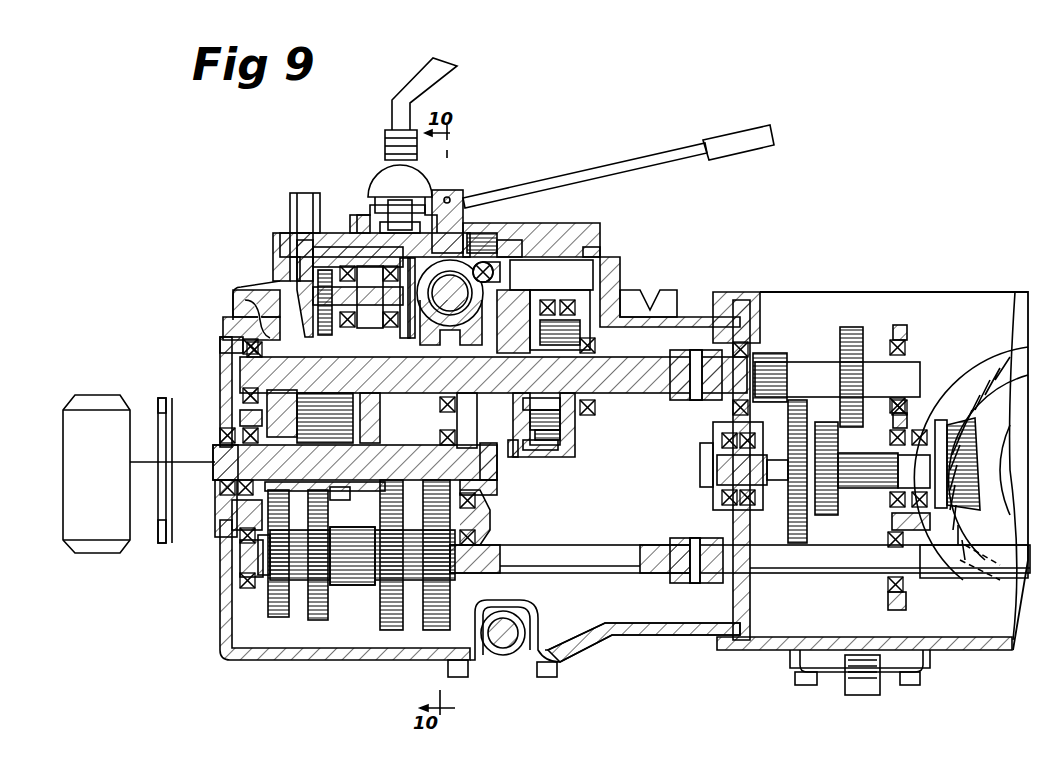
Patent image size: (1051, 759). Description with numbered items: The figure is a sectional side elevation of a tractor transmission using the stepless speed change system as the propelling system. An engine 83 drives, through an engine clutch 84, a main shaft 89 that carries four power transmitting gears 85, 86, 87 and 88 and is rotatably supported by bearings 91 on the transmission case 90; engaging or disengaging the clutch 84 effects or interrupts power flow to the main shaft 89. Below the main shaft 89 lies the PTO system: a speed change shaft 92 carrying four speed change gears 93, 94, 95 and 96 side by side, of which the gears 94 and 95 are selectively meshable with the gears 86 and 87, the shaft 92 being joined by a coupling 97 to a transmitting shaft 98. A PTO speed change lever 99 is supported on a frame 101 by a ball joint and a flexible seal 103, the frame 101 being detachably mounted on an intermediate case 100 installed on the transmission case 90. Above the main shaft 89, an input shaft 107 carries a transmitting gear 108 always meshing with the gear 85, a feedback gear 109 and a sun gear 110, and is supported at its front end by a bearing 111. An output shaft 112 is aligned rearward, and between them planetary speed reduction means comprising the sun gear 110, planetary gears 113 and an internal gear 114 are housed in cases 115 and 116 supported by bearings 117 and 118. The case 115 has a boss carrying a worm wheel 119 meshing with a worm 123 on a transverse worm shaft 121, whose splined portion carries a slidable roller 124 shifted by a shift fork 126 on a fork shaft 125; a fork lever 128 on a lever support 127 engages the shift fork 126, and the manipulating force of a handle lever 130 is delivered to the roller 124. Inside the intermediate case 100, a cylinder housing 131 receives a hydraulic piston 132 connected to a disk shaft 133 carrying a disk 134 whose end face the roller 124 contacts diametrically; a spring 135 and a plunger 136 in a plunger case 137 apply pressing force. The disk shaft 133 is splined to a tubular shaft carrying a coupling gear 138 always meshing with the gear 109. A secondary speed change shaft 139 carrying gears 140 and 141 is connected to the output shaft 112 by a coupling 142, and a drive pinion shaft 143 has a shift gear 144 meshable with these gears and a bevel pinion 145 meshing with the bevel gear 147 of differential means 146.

The engine 83 is at (70, 540).
The engine clutch 84 is at (160, 540).
The power transmitting gear 85 is at (278, 447).
The power transmitting gear 86 is at (342, 500).
The power transmitting gear 87 is at (378, 450).
The power transmitting gear 88 is at (440, 440).
The main shaft 89 is at (218, 470).
The transmission case 90 is at (300, 662).
The bearing 91 is at (485, 505).
The speed change shaft 92 is at (352, 578).
The speed change gear 93 is at (270, 605).
The speed change gear 94 is at (320, 615).
The speed change gear 95 is at (392, 630).
The speed change gear 96 is at (432, 632).
The coupling 97 is at (683, 583).
The transmitting shaft 98 is at (928, 580).
The PTO speed change lever 99 is at (415, 80).
The intermediate case 100 is at (275, 262).
The frame 101 is at (365, 203).
The flexible seal 103 is at (380, 178).
The input shaft 107 is at (305, 395).
The transmitting gear 108 is at (236, 310).
The gear 109 is at (378, 410).
The sun gear 110 is at (575, 455).
The bearing 111 is at (222, 349).
The output shaft 112 is at (635, 393).
The planetary gear 113 is at (548, 462).
The internal gear 114 is at (598, 300).
The case 115 is at (520, 465).
The case 116 is at (570, 428).
The bearing 117 is at (518, 355).
The bearing 118 is at (598, 348).
The worm wheel 119 is at (445, 448).
The worm shaft 121 is at (520, 280).
The worm 123 is at (470, 345).
The slidable roller 124 is at (422, 345).
The fork shaft 125 is at (515, 242).
The shift fork 126 is at (522, 257).
The lever support 127 is at (455, 195).
The fork lever 128 is at (482, 235).
The handle lever 130 is at (615, 165).
The cylinder housing 131 is at (270, 281).
The hydraulic piston 132 is at (318, 340).
The disk shaft 133 is at (392, 340).
The disk 134 is at (440, 285).
The spring 135 is at (290, 203).
The plunger 136 is at (280, 246).
The plunger case 137 is at (302, 193).
The coupling gear 138 is at (350, 335).
The secondary speed change shaft 139 is at (808, 368).
The gear 140 is at (770, 360).
The gear 141 is at (852, 333).
The coupling 142 is at (672, 400).
The drive pinion shaft 143 is at (868, 488).
The shift gear 144 is at (803, 522).
The bevel pinion 145 is at (955, 520).
The differential means 146 is at (997, 350).
The bevel gear 147 is at (965, 400).